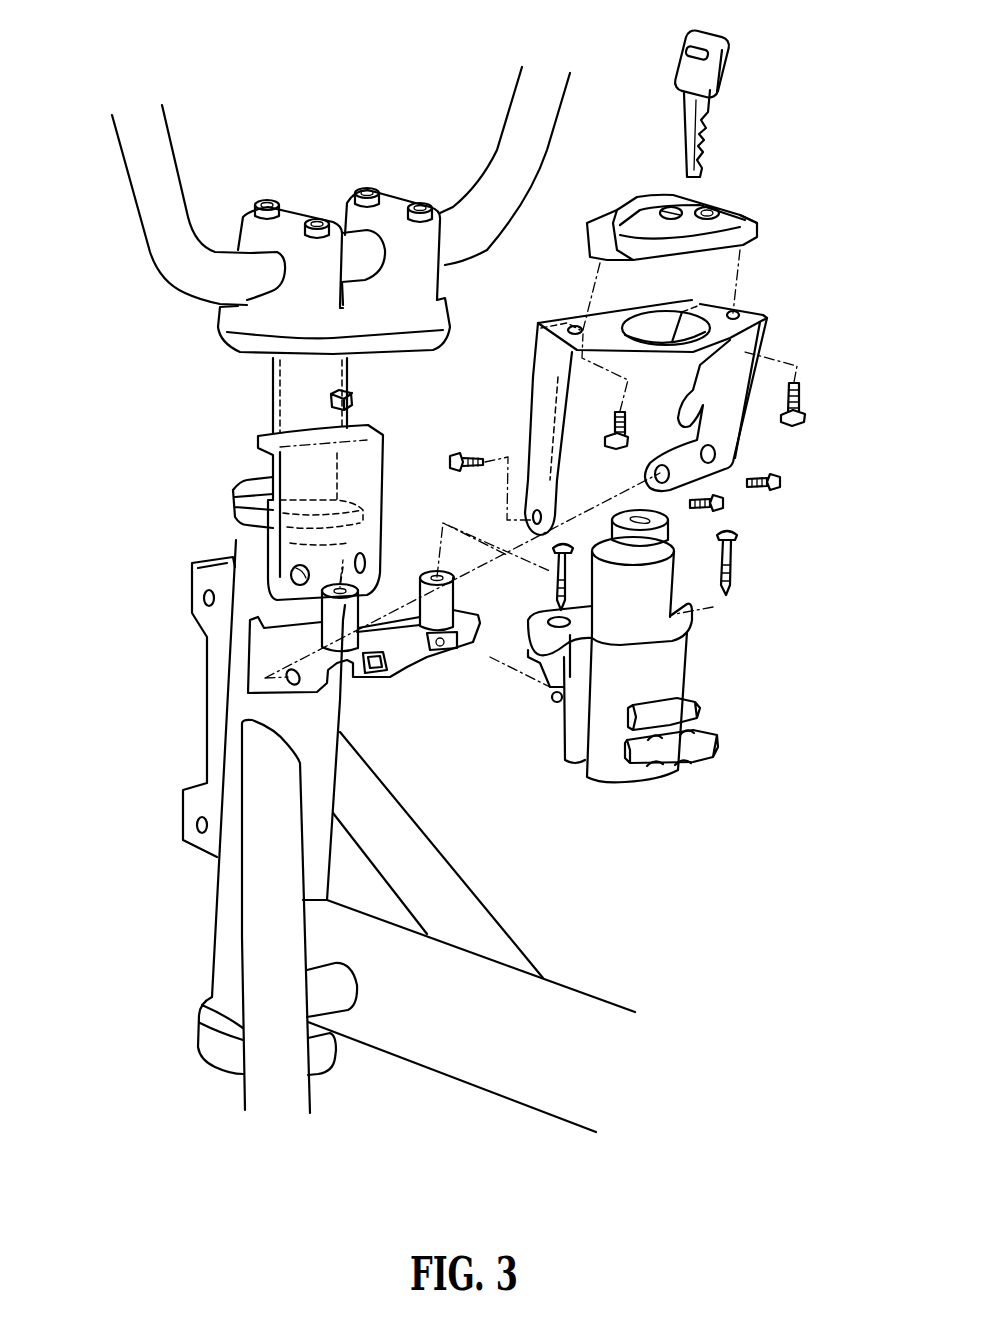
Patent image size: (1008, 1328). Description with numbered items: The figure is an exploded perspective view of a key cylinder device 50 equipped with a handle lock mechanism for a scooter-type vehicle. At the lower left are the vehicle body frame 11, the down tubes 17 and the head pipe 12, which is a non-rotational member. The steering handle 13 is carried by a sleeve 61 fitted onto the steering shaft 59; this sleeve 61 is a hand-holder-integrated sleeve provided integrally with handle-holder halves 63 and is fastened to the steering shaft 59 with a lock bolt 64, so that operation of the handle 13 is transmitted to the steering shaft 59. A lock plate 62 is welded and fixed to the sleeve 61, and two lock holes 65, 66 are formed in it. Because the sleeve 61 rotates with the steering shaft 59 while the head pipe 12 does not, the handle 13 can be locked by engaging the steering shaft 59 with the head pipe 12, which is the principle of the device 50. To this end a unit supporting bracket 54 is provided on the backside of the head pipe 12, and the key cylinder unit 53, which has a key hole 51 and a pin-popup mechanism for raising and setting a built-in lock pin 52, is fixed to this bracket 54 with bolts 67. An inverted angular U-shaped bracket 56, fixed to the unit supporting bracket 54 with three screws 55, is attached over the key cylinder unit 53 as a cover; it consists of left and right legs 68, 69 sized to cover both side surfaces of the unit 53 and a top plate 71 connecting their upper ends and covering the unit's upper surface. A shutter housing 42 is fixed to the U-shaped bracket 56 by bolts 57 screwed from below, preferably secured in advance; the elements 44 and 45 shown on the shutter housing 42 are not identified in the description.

The vehicle body frame 11 is at (458, 1062).
The head pipe 12 is at (249, 709).
The steering handle 13 is at (165, 163).
The down tubes 17 is at (410, 867).
The shutter housing 42 is at (705, 215).
The screw hole 44 is at (668, 207).
The key insertion hole 45 is at (713, 207).
The key cylinder device 50 is at (665, 684).
The key hole 51 is at (638, 512).
The lock pin 52 is at (553, 705).
The key cylinder unit 53 is at (663, 667).
The unit supporting bracket 54 is at (408, 645).
The screws 55 is at (463, 455).
The inverted angular U-shaped bracket 56 is at (665, 383).
The bolts 57 is at (627, 437).
The steering shaft 59 is at (283, 495).
The sleeve 61 is at (293, 397).
The lock plate 62 is at (360, 478).
The handle-holder halves 63 is at (443, 308).
The lock bolt 64 is at (347, 403).
The lock hole 65 is at (280, 573).
The lock hole 66 is at (367, 565).
The bolts 67 is at (713, 607).
The left leg 68 is at (543, 425).
The right leg 69 is at (747, 428).
The top plate 71 is at (607, 327).